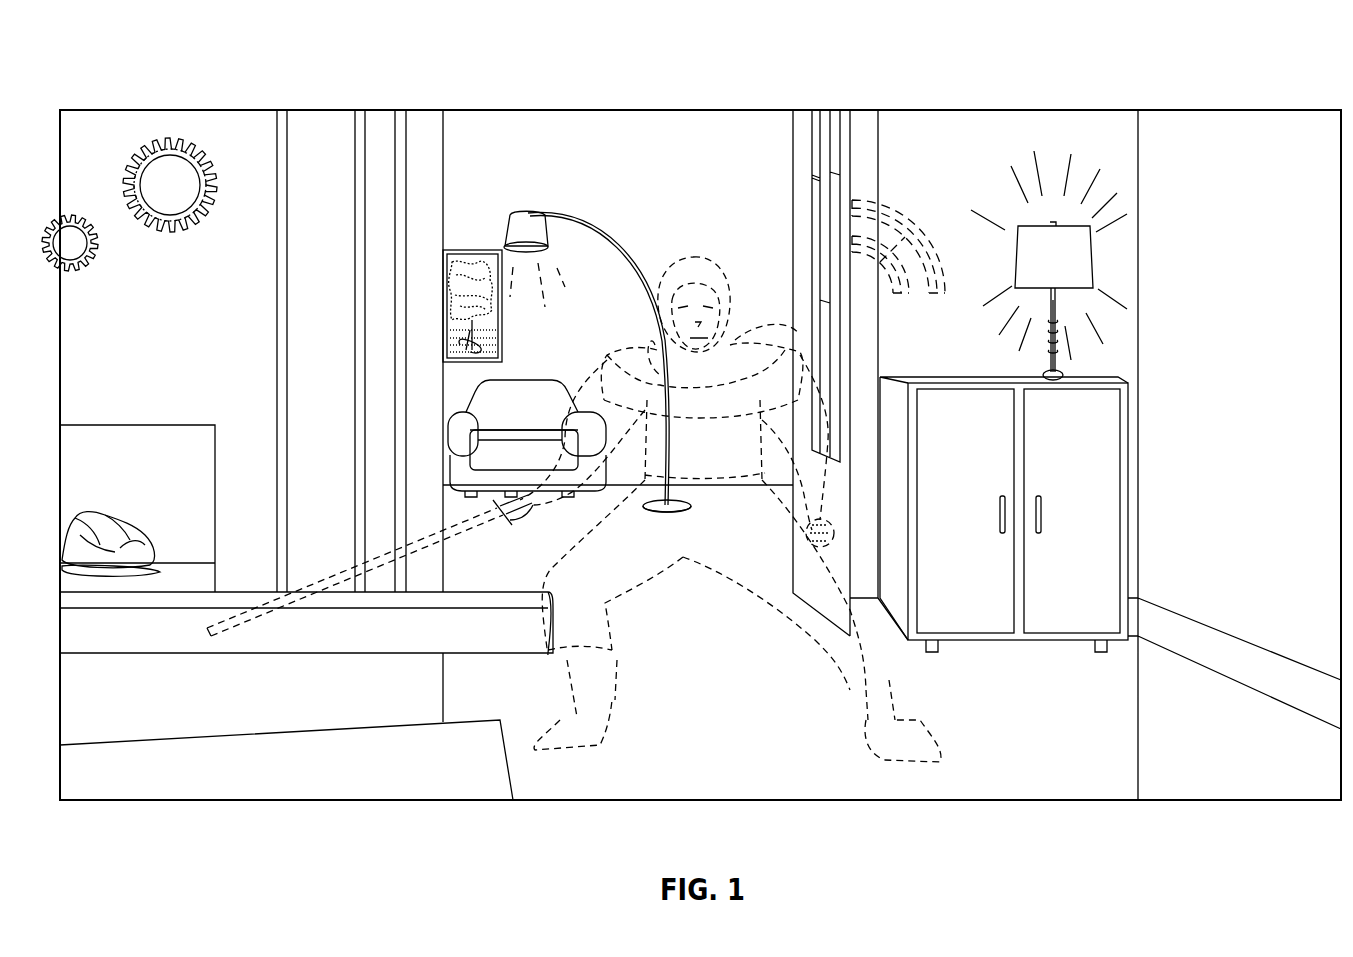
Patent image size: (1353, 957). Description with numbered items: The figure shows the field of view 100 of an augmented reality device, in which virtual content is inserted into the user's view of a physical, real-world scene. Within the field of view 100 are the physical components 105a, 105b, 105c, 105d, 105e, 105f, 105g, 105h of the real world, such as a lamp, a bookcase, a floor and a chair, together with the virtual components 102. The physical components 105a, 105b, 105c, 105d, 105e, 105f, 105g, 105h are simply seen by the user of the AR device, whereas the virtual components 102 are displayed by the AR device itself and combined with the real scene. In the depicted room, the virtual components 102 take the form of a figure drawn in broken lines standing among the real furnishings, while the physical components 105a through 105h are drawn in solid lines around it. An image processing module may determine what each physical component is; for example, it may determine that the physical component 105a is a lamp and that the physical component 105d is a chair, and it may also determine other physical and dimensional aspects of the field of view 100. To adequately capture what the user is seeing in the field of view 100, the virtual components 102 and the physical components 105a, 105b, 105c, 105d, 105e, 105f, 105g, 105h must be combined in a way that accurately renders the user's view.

The field of view 100 is at (1247, 53).
The virtual components 102 is at (772, 605).
The physical component 105a is at (1093, 258).
The physical component 105b is at (1128, 522).
The physical component 105c is at (470, 250).
The physical component 105d is at (553, 405).
The physical component 105e is at (587, 210).
The physical component 105f is at (200, 290).
The physical component 105g is at (105, 520).
The physical component 105h is at (213, 695).